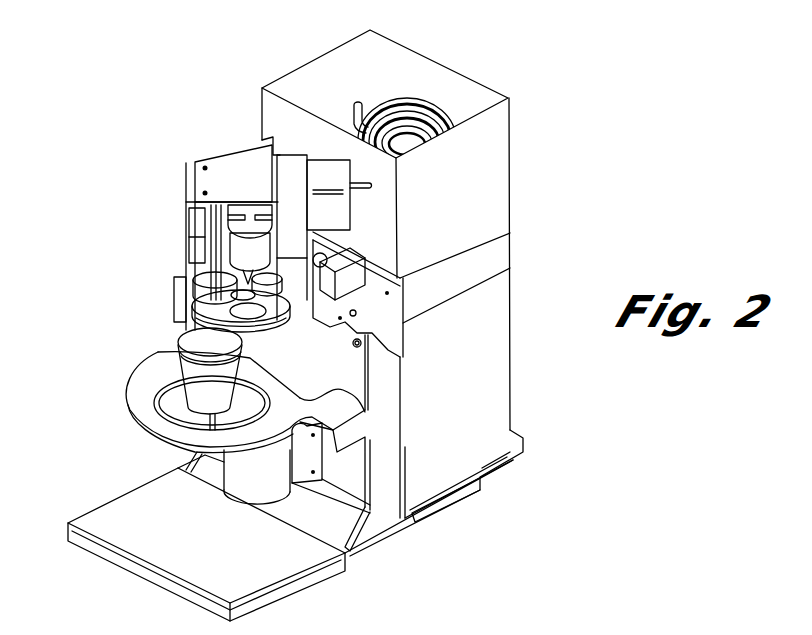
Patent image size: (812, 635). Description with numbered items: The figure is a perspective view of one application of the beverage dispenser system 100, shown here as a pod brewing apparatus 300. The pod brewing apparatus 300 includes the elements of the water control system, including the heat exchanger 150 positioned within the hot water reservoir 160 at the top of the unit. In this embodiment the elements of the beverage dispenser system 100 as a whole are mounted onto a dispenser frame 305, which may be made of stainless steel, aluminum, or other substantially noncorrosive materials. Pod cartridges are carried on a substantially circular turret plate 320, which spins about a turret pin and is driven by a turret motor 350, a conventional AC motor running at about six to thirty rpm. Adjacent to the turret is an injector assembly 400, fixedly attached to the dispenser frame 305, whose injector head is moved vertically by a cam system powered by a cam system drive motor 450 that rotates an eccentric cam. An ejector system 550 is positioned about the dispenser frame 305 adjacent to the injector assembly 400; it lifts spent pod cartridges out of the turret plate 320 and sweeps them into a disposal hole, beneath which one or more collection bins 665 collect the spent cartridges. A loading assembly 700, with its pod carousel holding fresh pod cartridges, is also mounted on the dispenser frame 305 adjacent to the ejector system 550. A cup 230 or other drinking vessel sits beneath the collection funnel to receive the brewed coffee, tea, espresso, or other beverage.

The beverage dispenser system 100 is at (117, 63).
The pod brewing apparatus 300 is at (306, 65).
The heat exchanger 150 is at (423, 103).
The hot water reservoir 160 is at (511, 97).
The cam system drive motor 450 is at (268, 142).
The turret motor 350 is at (186, 202).
The injector assembly 400 is at (200, 281).
The ejector system 550 is at (343, 258).
The turret plate 320 is at (200, 306).
The loading assembly 700 is at (192, 337).
The cup 230 is at (211, 388).
The dispenser frame 305 is at (389, 375).
The collection bin 665 is at (270, 480).